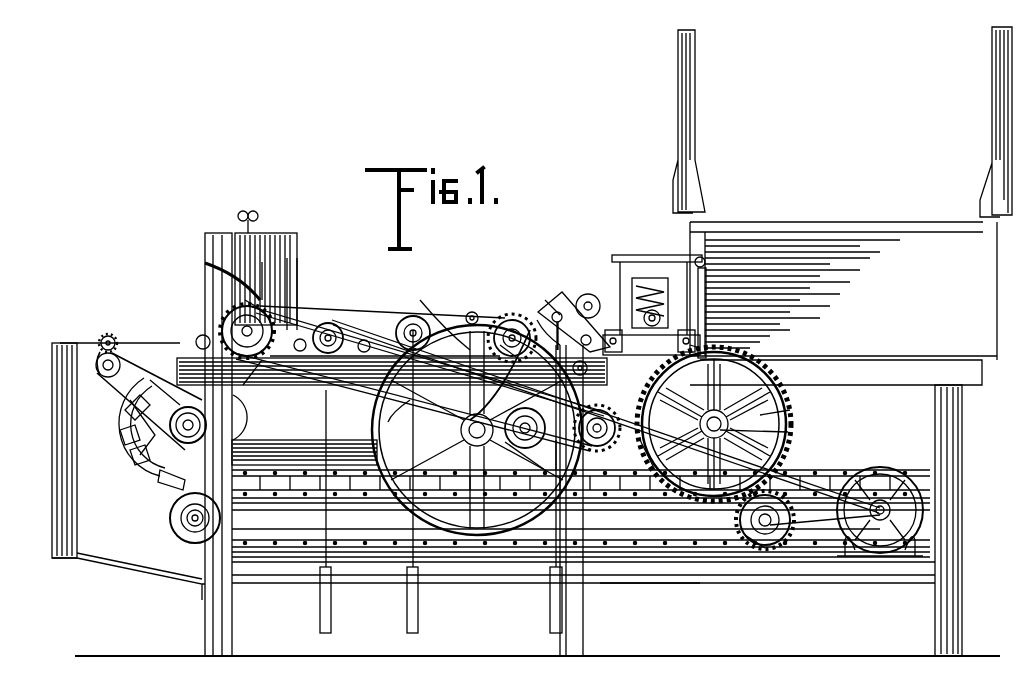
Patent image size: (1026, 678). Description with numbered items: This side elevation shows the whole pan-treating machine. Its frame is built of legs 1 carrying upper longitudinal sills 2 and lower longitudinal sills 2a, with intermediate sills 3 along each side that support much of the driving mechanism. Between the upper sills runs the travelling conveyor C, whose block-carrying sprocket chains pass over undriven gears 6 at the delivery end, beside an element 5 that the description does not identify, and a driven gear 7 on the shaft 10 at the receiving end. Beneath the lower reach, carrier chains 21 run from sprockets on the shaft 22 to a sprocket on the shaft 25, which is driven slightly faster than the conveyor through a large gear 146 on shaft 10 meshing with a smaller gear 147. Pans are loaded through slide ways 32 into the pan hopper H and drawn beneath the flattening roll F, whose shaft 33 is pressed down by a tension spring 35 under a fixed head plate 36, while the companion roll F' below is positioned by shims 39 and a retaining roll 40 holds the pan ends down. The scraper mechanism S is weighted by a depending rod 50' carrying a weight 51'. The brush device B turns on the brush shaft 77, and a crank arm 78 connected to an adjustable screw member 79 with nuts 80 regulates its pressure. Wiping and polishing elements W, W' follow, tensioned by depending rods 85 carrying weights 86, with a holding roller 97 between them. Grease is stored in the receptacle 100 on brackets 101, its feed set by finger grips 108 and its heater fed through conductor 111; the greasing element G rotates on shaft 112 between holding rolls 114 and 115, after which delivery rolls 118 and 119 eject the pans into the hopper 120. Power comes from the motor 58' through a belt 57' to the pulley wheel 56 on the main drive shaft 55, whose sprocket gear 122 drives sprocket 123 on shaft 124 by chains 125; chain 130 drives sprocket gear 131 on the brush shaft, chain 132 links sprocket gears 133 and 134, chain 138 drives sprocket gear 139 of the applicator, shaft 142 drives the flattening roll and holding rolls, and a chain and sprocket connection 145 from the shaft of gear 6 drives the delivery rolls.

The legs 1 is at (198, 602).
The upper longitudinal sills 2 is at (982, 378).
The lower longitudinal sills 2a is at (905, 576).
The intermediate sills 3 is at (292, 445).
The cam blocks 5 is at (135, 445).
The gears 6 is at (140, 428).
The gear 7 is at (780, 472).
The shaft 10 is at (790, 432).
The carrier chains 21 is at (556, 525).
The shaft 22 is at (180, 519).
The shaft 25 is at (780, 512).
The slide ways 32 is at (992, 200).
The shaft 33 is at (698, 320).
The tension spring 35 is at (652, 278).
The fixed head plate 36 is at (642, 280).
The shims 39 is at (643, 583).
The retaining roll 40 is at (700, 345).
The depending rod 50' is at (526, 530).
The weight 51' is at (589, 489).
The main drive shaft 55 is at (460, 426).
The pulley wheel 56 is at (372, 416).
The belt 57' is at (835, 476).
The motor 58' is at (881, 502).
The brush shaft 77 is at (508, 320).
The crank arm 78 is at (460, 330).
The adjustable screw member 79 is at (365, 392).
The nuts 80 is at (385, 372).
The depending rods 85 is at (583, 526).
The weights 86 is at (407, 604).
The holding roller 97 is at (336, 335).
The receptacle 100 is at (292, 242).
The brackets 101 is at (292, 300).
The finger grips 108 is at (245, 208).
The conductor 111 is at (232, 292).
The shaft 112 is at (210, 290).
The holding roll 114 is at (258, 380).
The holding roll 115 is at (200, 335).
The delivery roll 118 is at (130, 314).
The delivery roll 119 is at (96, 362).
The hopper 120 is at (55, 512).
The sprocket gear 122 is at (412, 516).
The sprocket 123 is at (655, 470).
The shaft 124 is at (602, 452).
The chains 125 is at (480, 450).
The chain 130 is at (612, 364).
The sprocket gear 131 is at (518, 320).
The chain 132 is at (472, 308).
The sprocket gear 133 is at (405, 312).
The sprocket gear 134 is at (535, 320).
The chain 138 is at (298, 395).
The sprocket gear 139 is at (240, 318).
The shaft 142 is at (523, 450).
The chain and sprocket connection 145 is at (95, 385).
The large gear 146 is at (770, 400).
The smaller gear 147 is at (782, 535).
The brush device B is at (520, 310).
The conveyor C is at (130, 408).
The flattening roll F is at (576, 305).
The companion flattening roll F' is at (804, 408).
The greasing element G is at (262, 262).
The pan hopper H is at (970, 300).
The scraper mechanism S is at (574, 309).
The wiping element W is at (413, 312).
The polishing element W' is at (335, 319).